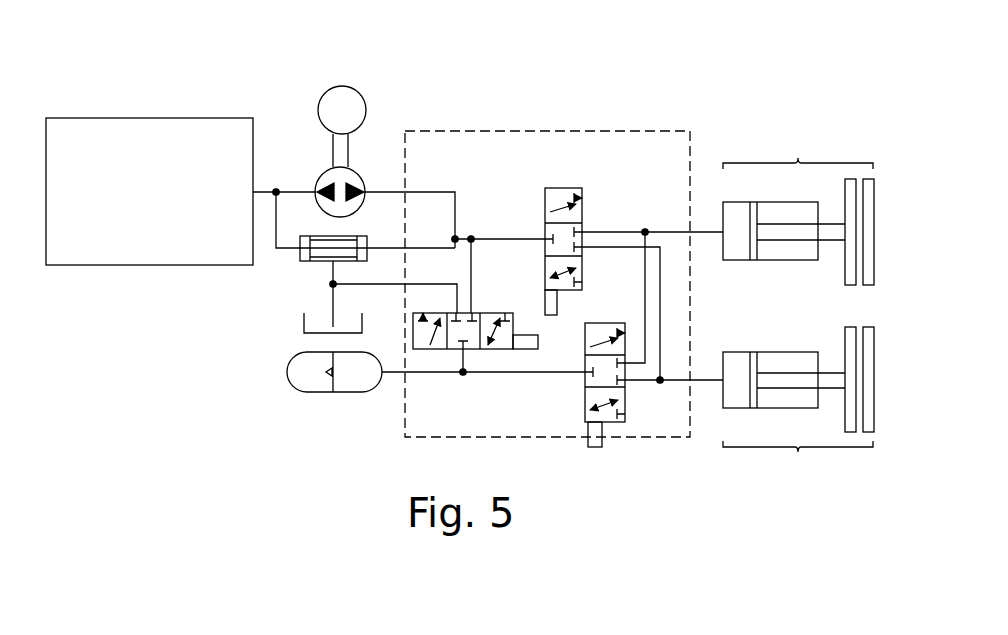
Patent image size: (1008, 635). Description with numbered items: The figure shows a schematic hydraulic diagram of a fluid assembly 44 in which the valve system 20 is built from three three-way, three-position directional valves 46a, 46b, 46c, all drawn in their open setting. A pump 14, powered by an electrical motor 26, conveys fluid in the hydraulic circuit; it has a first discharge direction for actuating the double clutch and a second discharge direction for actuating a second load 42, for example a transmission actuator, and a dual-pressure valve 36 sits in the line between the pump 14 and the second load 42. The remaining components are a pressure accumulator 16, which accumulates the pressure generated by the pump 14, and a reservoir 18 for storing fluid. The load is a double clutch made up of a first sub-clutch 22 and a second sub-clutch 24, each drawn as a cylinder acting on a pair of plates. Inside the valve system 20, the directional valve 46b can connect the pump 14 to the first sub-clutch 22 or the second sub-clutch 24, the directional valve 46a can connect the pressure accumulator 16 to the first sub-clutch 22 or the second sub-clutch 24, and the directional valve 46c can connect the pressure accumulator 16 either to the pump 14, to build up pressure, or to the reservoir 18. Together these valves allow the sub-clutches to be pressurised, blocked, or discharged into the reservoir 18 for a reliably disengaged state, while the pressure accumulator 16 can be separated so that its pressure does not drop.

The pump 14 is at (363, 175).
The pressure accumulator 16 is at (318, 393).
The reservoir 18 is at (304, 334).
The valve system 20 is at (660, 132).
The first sub-clutch 22 is at (798, 208).
The second sub-clutch 24 is at (798, 404).
The electrical motor 26 is at (347, 87).
The dual-pressure valve 36 is at (300, 263).
The second load 42 is at (148, 265).
The fluid assembly 44 is at (724, 120).
The 3/3 directional valve 46a is at (612, 423).
The 3/3 directional valve 46b is at (562, 188).
The 3/3 directional valve 46c is at (425, 351).